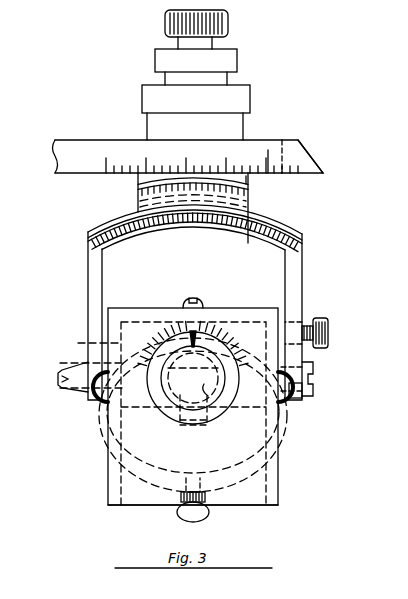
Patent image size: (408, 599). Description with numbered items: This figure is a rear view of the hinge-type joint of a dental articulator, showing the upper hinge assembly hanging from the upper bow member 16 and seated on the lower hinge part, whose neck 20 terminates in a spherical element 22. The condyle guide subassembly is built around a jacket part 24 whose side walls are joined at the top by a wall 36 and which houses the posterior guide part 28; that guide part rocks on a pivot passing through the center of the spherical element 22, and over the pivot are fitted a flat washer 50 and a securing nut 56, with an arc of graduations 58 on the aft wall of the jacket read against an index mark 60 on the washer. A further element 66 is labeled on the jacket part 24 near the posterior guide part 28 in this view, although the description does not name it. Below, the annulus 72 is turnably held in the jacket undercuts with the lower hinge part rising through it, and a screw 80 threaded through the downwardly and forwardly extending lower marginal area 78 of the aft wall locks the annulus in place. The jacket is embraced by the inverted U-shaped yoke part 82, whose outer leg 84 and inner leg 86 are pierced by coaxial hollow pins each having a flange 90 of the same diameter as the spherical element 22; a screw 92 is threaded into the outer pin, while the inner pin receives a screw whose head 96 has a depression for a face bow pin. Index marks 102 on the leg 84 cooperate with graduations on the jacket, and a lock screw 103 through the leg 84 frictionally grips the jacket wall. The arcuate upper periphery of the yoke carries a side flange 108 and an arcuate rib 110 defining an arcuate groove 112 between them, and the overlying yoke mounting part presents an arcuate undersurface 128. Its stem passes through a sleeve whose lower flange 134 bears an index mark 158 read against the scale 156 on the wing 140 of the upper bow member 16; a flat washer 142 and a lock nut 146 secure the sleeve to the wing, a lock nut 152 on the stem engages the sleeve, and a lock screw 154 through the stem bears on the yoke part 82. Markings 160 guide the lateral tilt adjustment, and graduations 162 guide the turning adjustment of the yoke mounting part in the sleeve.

The upper bow member 16 is at (78, 155).
The neck 20 is at (180, 442).
The spherical element 22 is at (183, 417).
The jacket part 24 is at (135, 428).
The posterior guide part 28 is at (145, 318).
The top wall 36 is at (134, 312).
The flat washer 50 is at (224, 405).
The nut 56 is at (202, 392).
The arc of graduations 58 is at (236, 342).
The index mark 60 is at (204, 338).
The index 66 is at (192, 300).
The annulus 72 is at (288, 448).
The lower marginal area of wall 78 is at (125, 497).
The screw 80 is at (180, 510).
The yoke part 82 is at (201, 302).
The outer yoke leg 84 is at (295, 293).
The inner yoke leg 86 is at (92, 296).
The flange 90 is at (294, 430).
The screw 92 is at (312, 367).
The head 96 is at (70, 390).
The index marks 102 is at (300, 396).
The lock screw 103 is at (330, 322).
The side flange 108 is at (88, 233).
The arcuate rib 110 is at (96, 260).
The arcuate groove 112 is at (96, 248).
The arcuate undersurface 128 is at (186, 227).
The flange 134 is at (255, 180).
The wing 140 is at (290, 150).
The flat washer 142 is at (155, 134).
The lock nut 146 is at (158, 97).
The lock nut 152 is at (170, 60).
The lock screw 154 is at (165, 23).
The scale 156 is at (108, 172).
The index mark 158 is at (140, 184).
The markings 160 is at (210, 226).
The graduations 162 is at (248, 200).